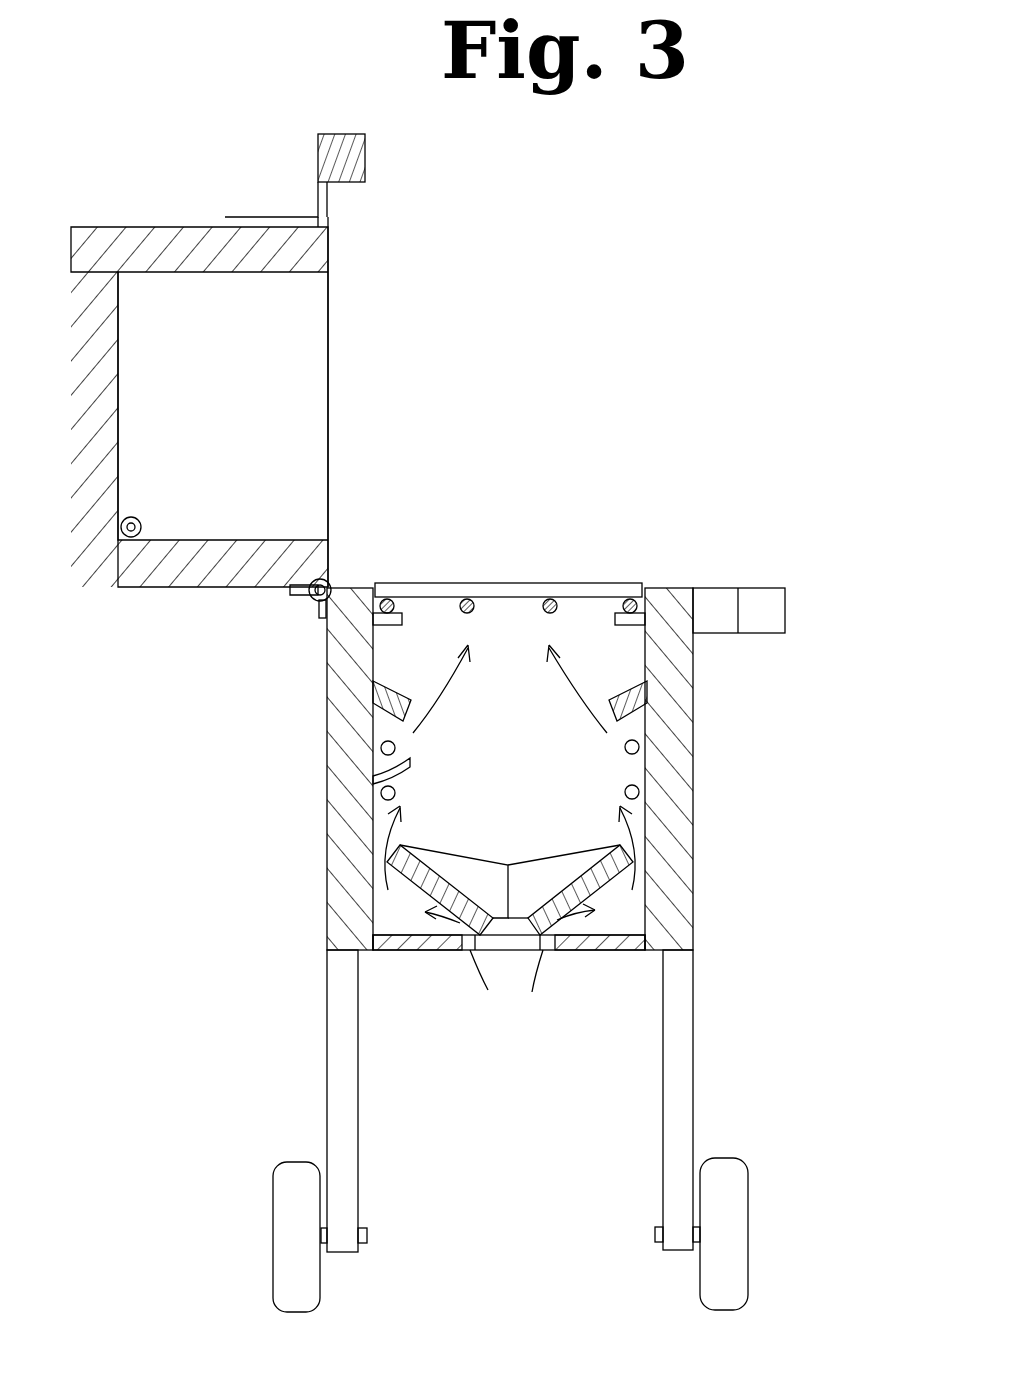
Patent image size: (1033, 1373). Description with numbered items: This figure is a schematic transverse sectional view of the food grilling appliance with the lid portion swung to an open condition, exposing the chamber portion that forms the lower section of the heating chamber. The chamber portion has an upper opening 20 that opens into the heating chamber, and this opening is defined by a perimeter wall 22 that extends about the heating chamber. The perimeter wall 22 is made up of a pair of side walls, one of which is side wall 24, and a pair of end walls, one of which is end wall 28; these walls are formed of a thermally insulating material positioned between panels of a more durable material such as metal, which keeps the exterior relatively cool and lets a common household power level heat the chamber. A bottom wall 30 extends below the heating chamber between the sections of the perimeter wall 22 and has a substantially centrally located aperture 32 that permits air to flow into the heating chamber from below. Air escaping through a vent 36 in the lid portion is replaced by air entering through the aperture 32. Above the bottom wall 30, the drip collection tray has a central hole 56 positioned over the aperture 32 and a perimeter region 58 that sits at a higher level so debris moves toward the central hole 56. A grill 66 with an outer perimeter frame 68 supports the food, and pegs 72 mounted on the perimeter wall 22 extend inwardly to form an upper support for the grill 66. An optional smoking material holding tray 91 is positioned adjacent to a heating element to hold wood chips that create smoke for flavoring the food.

The upper opening 20 is at (512, 570).
The perimeter wall 22 is at (342, 760).
The side wall 24 is at (677, 705).
The end wall 28 is at (597, 770).
The bottom wall 30 is at (417, 953).
The aperture 32 is at (520, 950).
The vent 36 is at (138, 535).
The central hole 56 is at (522, 913).
The perimeter region 58 is at (463, 855).
The grill 66 is at (442, 583).
The outer perimeter frame 68 is at (642, 582).
The pegs 72 is at (350, 690).
The smoking material holding tray 91 is at (373, 790).